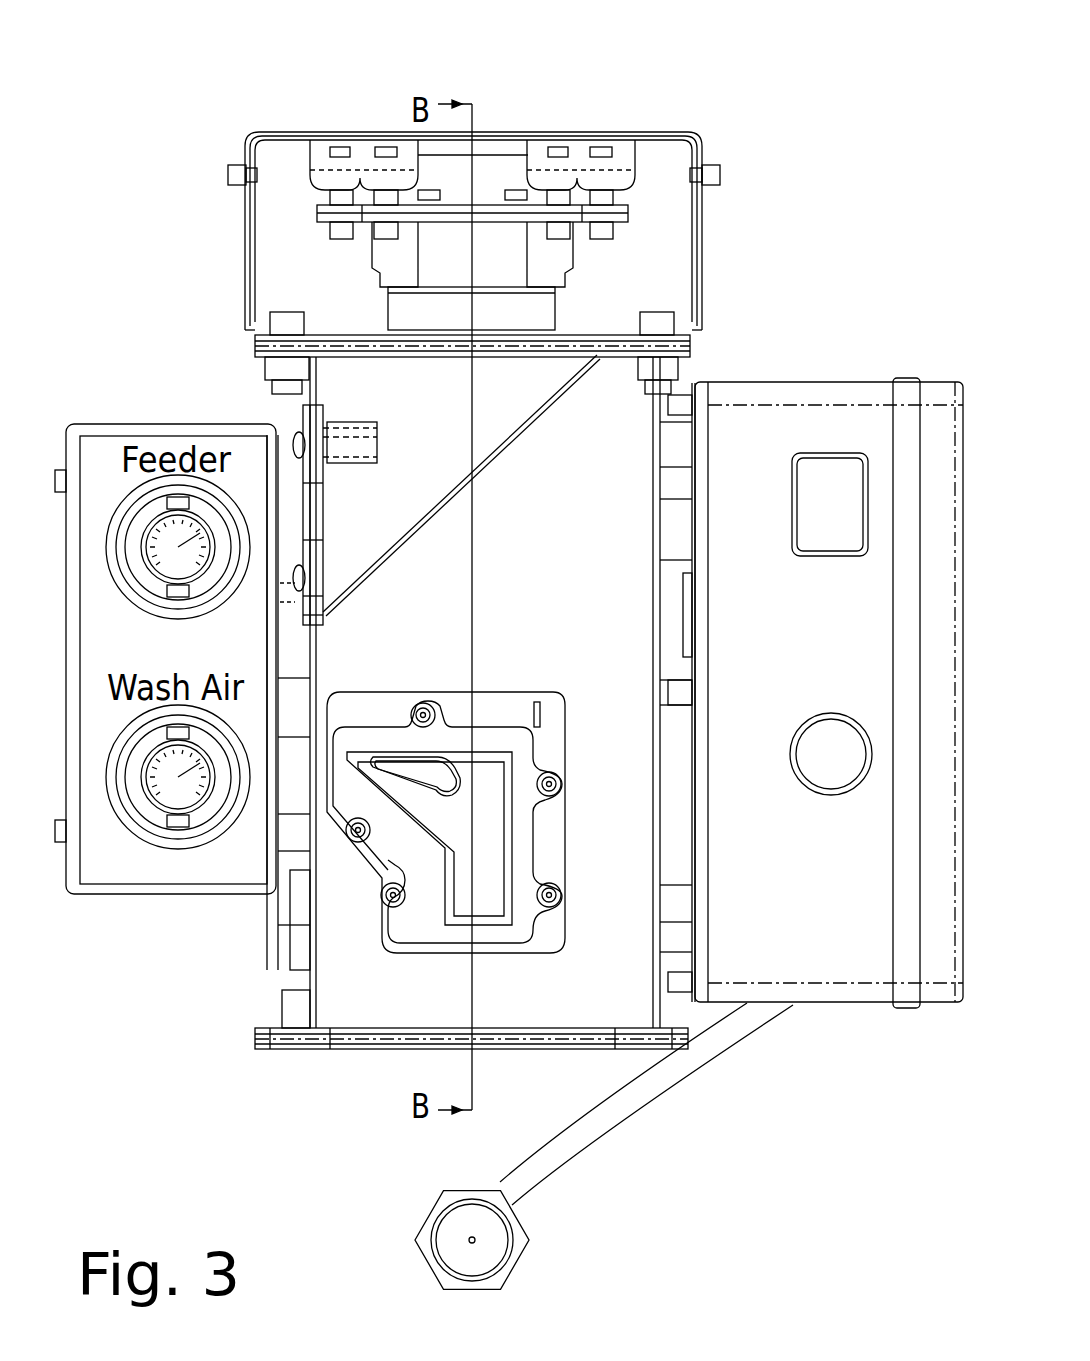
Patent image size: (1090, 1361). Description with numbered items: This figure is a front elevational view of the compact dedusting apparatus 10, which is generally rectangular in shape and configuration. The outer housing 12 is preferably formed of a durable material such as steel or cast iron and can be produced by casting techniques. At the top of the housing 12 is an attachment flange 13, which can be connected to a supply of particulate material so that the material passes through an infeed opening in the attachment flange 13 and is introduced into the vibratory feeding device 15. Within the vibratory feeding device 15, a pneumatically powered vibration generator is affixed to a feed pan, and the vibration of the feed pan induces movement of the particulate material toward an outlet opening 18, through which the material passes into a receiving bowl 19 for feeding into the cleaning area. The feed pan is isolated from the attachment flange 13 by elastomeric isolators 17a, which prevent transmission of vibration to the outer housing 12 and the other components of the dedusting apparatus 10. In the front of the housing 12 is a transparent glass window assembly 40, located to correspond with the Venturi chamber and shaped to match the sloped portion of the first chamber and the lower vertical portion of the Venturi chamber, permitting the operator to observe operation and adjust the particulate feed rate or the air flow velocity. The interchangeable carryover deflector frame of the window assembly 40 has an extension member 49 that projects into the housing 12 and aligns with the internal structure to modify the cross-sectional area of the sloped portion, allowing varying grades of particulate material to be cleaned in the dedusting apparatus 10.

The dedusting apparatus 10 is at (196, 126).
The outer housing 12 is at (602, 937).
The attachment flange 13 is at (650, 130).
The vibratory feeding device 15 is at (625, 247).
The elastomeric isolators 17a is at (365, 160).
The outlet opening 18 is at (345, 300).
The receiving bowl 19 is at (490, 465).
The transparent glass window assembly 40 is at (585, 843).
The extension member 49 is at (430, 775).